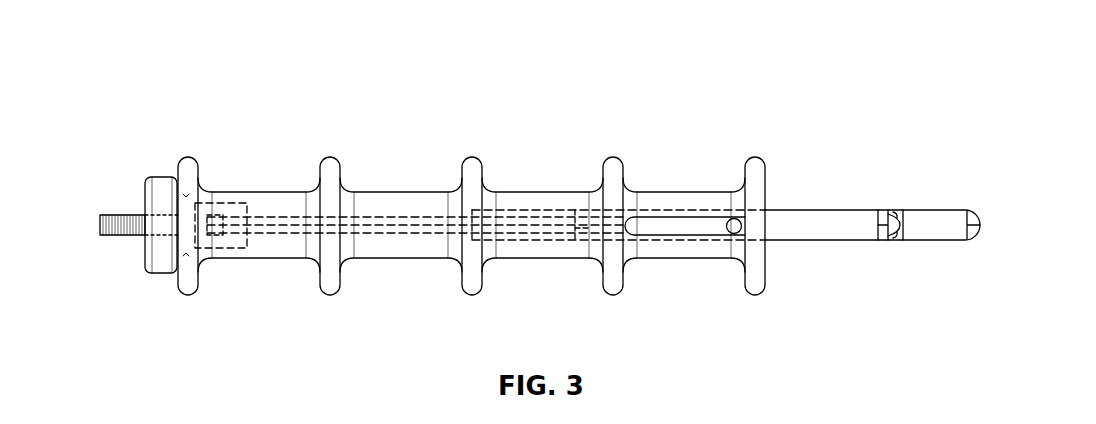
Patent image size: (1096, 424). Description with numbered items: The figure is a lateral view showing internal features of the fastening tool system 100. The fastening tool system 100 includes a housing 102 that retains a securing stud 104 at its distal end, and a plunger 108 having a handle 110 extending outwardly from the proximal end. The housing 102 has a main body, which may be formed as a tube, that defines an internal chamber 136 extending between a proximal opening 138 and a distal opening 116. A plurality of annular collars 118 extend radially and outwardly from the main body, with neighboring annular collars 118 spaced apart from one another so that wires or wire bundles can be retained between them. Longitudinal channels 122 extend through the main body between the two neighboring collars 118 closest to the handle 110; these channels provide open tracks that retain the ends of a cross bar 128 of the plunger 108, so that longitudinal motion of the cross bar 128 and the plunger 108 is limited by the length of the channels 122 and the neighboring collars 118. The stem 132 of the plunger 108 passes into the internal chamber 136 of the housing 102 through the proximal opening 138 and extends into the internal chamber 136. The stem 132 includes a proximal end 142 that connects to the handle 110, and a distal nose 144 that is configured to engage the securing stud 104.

The fastening tool system 100 is at (300, 93).
The housing 102 is at (761, 303).
The securing stud 104 is at (118, 212).
The plunger 108 is at (814, 201).
The handle 110 is at (962, 210).
The distal opening 116 is at (145, 236).
The annular collars 118 is at (612, 157).
The longitudinal channels 122 is at (692, 229).
The cross bar 128 is at (729, 217).
The stem 132 is at (817, 236).
The internal chamber 136 is at (668, 223).
The proximal opening 138 is at (766, 209).
The proximal end 142 is at (884, 210).
The distal nose 144 is at (206, 214).